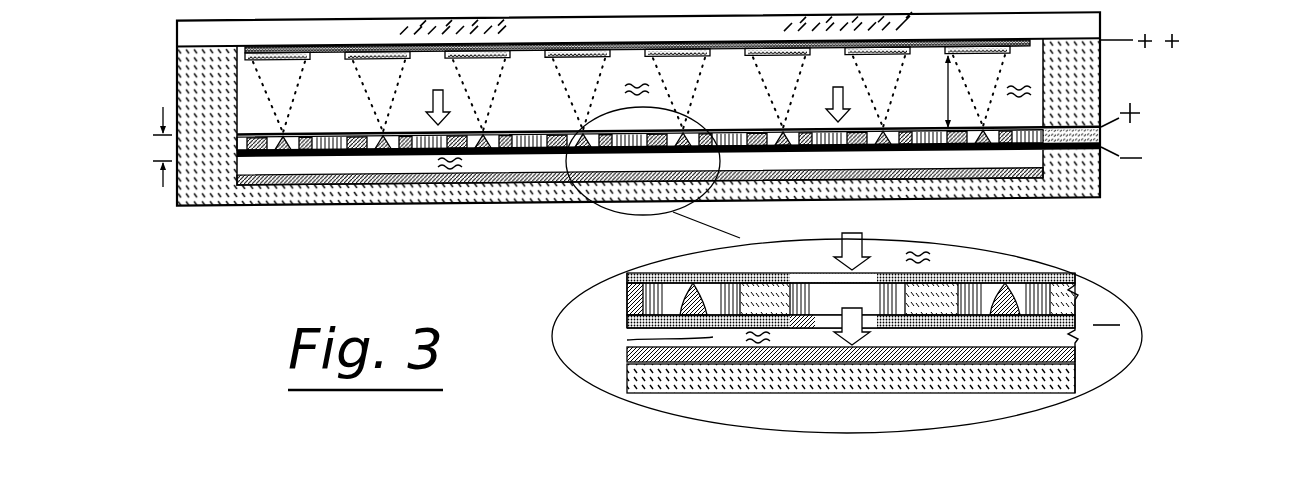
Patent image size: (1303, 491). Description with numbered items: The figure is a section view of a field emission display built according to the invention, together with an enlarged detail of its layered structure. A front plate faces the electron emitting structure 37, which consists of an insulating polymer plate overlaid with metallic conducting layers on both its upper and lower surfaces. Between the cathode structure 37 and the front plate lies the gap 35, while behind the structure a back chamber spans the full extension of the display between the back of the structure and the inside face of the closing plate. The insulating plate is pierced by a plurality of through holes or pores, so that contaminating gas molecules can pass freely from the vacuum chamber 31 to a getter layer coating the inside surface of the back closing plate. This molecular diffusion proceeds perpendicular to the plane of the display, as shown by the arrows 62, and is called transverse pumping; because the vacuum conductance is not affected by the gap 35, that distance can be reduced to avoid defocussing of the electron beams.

The vacuum chamber 31 is at (1027, 81).
The gap 35 is at (948, 88).
The electron emitting structure 37 is at (153, 148).
The arrows 62 is at (853, 252).